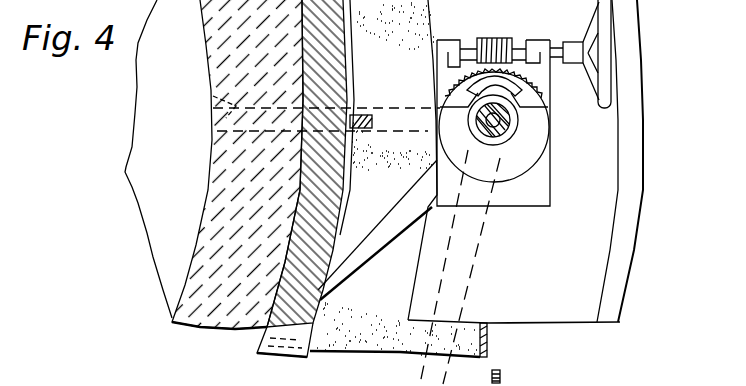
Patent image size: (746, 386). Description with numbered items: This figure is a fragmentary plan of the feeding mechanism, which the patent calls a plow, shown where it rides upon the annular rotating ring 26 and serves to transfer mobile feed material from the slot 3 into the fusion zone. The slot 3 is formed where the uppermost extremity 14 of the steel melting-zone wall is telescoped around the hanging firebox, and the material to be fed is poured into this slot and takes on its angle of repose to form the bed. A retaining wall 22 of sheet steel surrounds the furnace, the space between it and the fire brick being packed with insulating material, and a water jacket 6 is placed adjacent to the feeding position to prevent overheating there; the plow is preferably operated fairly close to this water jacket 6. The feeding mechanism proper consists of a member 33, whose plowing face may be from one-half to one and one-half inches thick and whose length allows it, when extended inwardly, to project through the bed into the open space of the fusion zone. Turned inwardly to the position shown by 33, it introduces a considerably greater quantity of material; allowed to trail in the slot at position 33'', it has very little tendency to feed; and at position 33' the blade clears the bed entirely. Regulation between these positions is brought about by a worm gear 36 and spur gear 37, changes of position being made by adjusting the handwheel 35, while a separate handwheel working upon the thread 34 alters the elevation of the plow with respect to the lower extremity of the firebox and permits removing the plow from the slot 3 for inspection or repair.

The slot 3 is at (411, 345).
The water jacket 6 is at (292, 340).
The uppermost extremity of melting zone wall 14 is at (489, 338).
The retaining wall 22 is at (344, 203).
The annular rotating ring 26 is at (600, 178).
The plow member 33 is at (377, 230).
The plow clearing position 33' is at (305, 103).
The plow trailing position 33'' is at (472, 267).
The thread 34 is at (519, 375).
The handwheel 35 is at (605, 33).
The worm gear 36 is at (498, 37).
The spur gear 37 is at (545, 82).